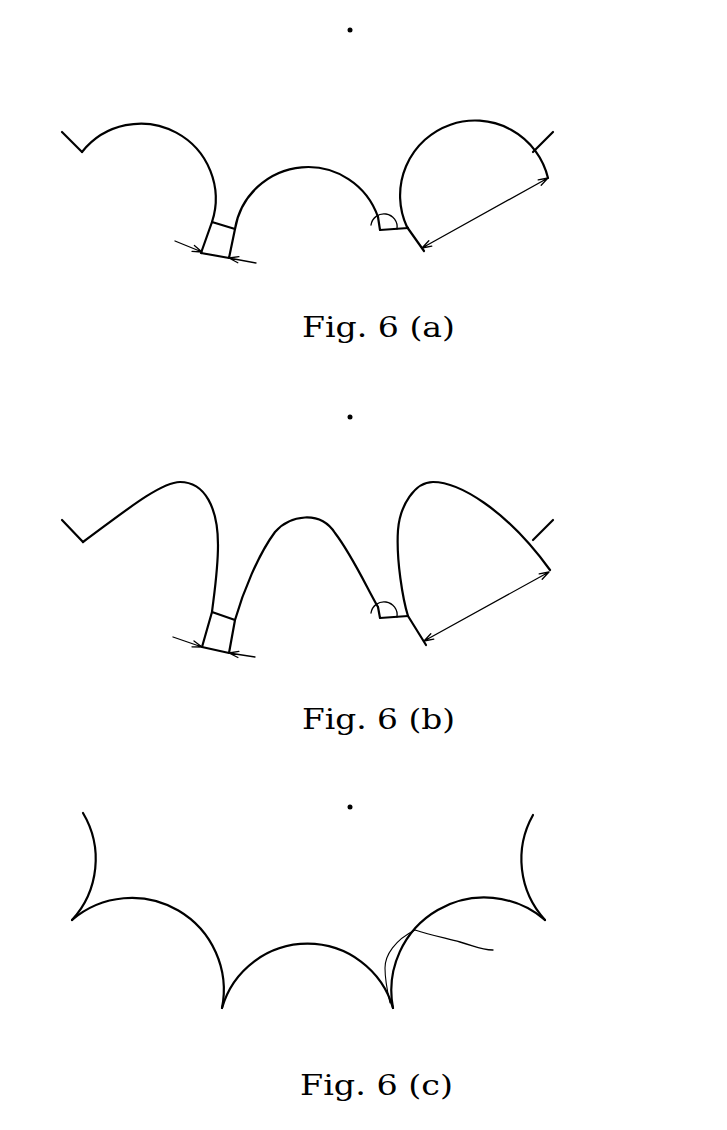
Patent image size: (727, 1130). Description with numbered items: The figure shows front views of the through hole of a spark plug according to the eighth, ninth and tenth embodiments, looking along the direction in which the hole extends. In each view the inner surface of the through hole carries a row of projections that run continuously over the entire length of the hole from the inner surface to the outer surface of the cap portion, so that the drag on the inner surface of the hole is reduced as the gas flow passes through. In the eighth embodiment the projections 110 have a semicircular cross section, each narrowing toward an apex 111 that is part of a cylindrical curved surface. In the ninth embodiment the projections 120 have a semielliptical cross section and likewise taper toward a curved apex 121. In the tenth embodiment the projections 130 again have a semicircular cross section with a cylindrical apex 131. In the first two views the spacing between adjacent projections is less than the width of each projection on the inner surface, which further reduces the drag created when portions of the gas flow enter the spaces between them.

The projections 110 is at (307, 136).
The apex 111 is at (440, 132).
The projections 120 is at (307, 522).
The apex 121 is at (417, 487).
The projections 130 is at (308, 885).
The apex 131 is at (437, 907).